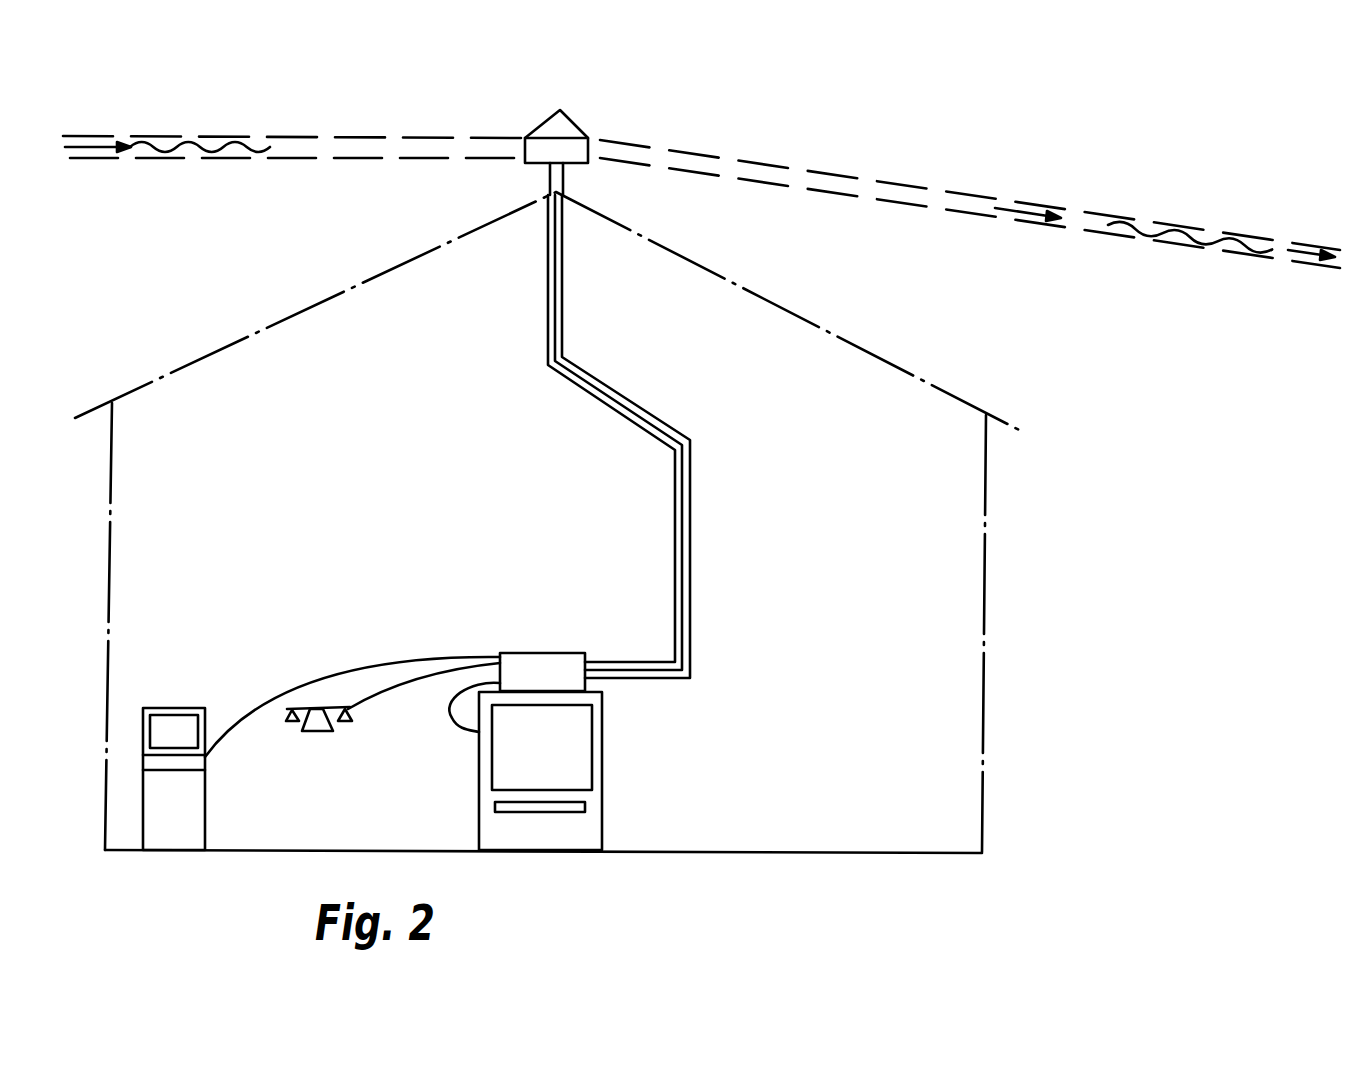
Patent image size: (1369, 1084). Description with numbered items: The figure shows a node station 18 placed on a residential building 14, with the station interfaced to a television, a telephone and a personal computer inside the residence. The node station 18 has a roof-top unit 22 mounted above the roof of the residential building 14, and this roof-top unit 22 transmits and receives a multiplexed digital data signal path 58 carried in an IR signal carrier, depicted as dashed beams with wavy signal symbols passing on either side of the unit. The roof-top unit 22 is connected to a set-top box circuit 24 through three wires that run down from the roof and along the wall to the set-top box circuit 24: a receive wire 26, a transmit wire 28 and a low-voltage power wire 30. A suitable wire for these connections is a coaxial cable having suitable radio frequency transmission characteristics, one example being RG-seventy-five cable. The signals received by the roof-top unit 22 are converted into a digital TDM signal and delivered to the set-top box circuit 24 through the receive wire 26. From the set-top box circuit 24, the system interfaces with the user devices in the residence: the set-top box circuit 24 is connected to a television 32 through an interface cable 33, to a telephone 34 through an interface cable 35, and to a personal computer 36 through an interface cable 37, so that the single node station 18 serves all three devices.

The residential building 14 is at (845, 338).
The node station 18 is at (590, 136).
The roof-top unit 22 is at (560, 124).
The set-top box circuit 24 is at (540, 653).
The receive wire 26 is at (676, 485).
The transmit wire 28 is at (689, 503).
The low-voltage power wire 30 is at (690, 592).
The television 32 is at (580, 740).
The interface cable 33 is at (464, 732).
The telephone 34 is at (325, 732).
The interface cable 35 is at (413, 680).
The personal computer 36 is at (173, 716).
The interface cable 37 is at (311, 681).
The multiplexed digital data signal path 58 is at (190, 152).